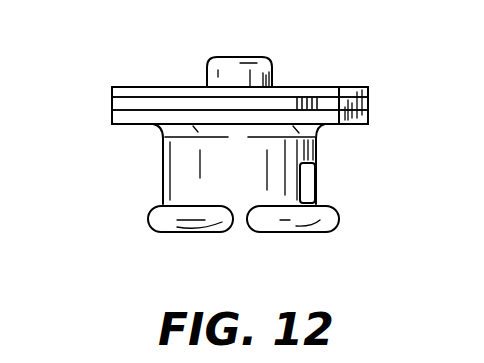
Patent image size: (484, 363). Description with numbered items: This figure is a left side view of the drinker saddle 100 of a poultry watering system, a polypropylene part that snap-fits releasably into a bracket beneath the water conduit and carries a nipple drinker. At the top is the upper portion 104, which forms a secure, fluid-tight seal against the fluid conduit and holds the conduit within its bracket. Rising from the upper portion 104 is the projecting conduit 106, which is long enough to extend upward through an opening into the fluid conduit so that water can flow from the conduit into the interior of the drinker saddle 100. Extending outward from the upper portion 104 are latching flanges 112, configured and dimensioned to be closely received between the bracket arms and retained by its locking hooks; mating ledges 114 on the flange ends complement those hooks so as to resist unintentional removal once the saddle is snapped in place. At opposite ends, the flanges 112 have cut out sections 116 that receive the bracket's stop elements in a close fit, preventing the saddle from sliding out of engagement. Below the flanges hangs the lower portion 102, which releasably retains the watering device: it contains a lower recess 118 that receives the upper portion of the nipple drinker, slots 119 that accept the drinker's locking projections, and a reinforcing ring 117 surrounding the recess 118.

The drinker saddle 100 is at (110, 165).
The lower portion 102 is at (148, 184).
The upper portion 104 is at (102, 79).
The projecting conduit 106 is at (262, 72).
The latching flanges 112 is at (169, 110).
The mating ledges 114 is at (136, 111).
The cut out sections 116 is at (352, 93).
The reinforcing ring 117 is at (308, 224).
The lower recess 118 is at (238, 246).
The slots 119 is at (312, 178).